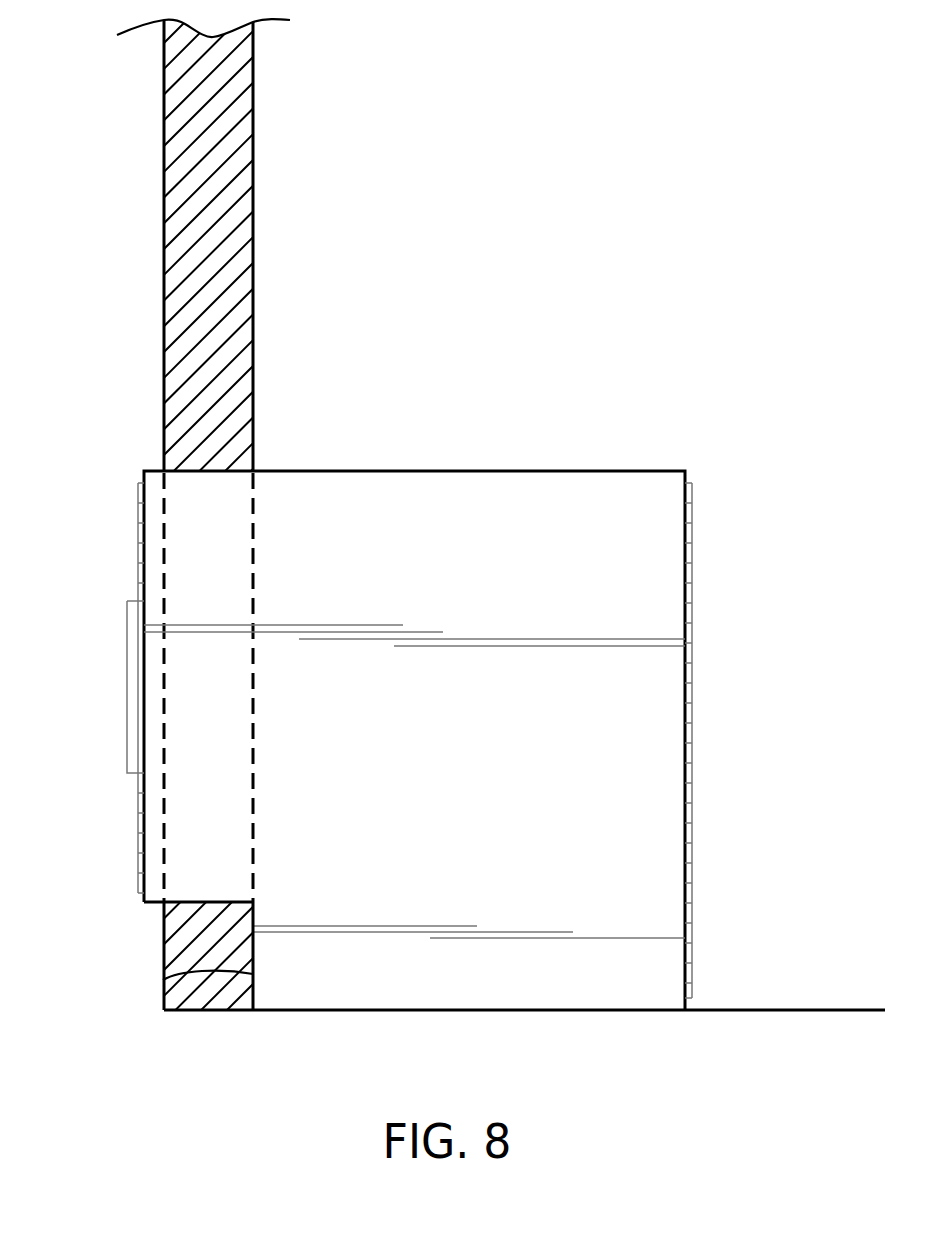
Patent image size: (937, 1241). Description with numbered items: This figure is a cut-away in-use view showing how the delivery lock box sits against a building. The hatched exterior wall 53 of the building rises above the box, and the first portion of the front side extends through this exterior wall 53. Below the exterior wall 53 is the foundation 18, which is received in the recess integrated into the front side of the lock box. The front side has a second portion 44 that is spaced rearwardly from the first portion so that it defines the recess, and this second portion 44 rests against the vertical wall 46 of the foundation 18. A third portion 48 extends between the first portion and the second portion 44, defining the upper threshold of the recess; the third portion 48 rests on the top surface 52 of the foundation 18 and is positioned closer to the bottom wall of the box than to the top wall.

The exterior wall 53 is at (164, 350).
The top surface 52 is at (190, 900).
The foundation 18 is at (165, 923).
The third portion 48 is at (212, 903).
The second portion 44 is at (163, 980).
The vertical wall 46 is at (253, 986).